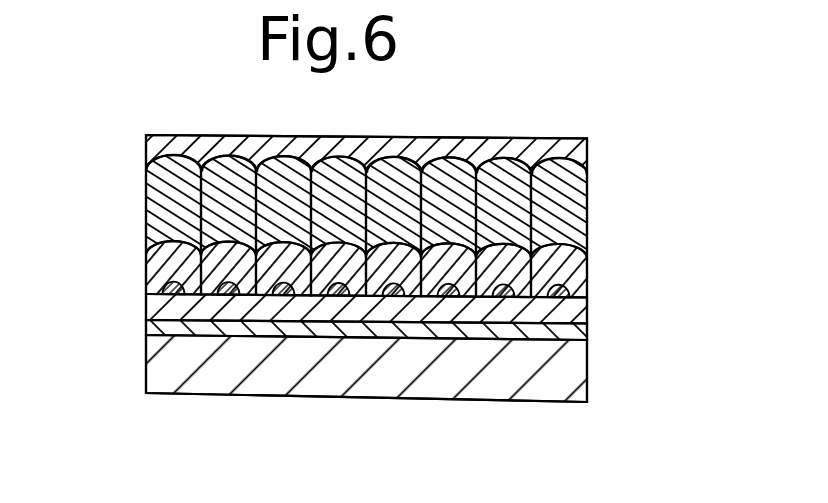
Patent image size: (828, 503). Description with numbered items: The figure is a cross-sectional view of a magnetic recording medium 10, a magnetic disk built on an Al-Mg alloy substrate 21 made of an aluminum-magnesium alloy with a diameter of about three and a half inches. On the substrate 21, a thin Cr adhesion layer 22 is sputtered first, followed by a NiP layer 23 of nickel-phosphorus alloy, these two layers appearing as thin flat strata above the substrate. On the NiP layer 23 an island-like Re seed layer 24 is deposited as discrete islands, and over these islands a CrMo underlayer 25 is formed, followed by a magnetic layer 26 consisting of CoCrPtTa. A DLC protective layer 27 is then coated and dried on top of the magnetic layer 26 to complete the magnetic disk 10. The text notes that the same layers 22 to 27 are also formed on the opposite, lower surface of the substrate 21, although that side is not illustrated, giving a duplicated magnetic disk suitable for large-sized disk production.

The magnetic recording medium 10 is at (128, 142).
The Al-Mg alloy substrate 21 is at (573, 378).
The Cr adhesion layer 22 is at (580, 334).
The NiP layer 23 is at (573, 318).
The island-like Re seed layer 24 is at (578, 293).
The CrMo underlayer 25 is at (577, 258).
The magnetic layer 26 is at (567, 213).
The DLC protective layer 27 is at (577, 150).